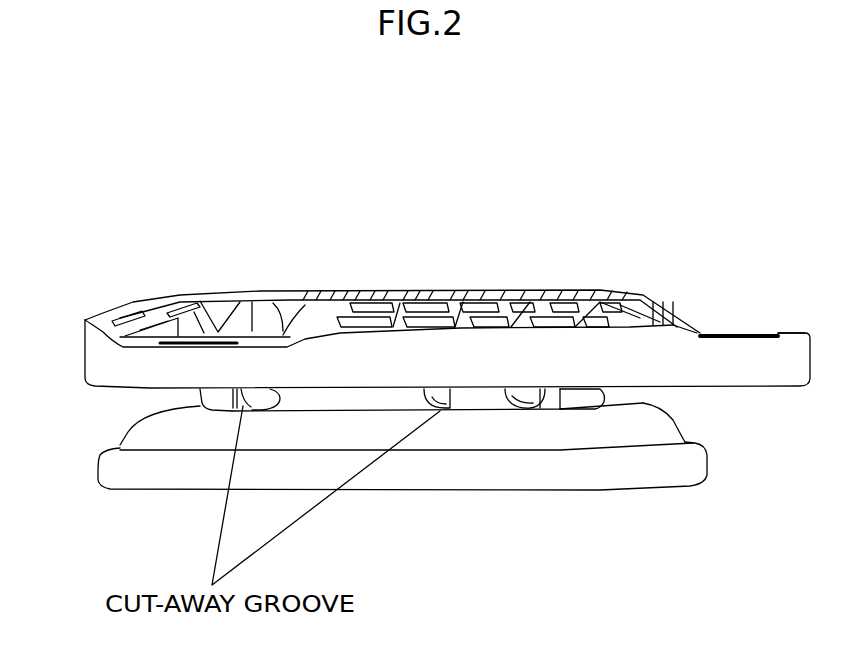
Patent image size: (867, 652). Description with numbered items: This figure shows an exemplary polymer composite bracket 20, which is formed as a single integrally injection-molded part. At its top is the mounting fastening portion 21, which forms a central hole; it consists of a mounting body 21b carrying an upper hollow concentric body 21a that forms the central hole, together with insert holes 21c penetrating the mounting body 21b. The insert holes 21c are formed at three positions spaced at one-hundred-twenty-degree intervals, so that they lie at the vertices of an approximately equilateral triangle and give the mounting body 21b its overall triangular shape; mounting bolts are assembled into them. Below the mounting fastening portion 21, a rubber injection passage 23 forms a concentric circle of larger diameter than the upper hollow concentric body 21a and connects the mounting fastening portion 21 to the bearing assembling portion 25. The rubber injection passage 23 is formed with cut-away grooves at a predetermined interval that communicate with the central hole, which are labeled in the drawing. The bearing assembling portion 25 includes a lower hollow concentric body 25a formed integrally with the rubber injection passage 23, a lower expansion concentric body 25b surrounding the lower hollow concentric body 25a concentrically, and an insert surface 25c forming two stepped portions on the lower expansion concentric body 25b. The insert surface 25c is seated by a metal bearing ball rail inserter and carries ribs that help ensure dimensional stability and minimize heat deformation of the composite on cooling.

The polymer composite bracket 20 is at (784, 292).
The mounting fastening portion 21 is at (62, 300).
The upper hollow concentric body 21a is at (506, 300).
The mounting body 21b is at (723, 328).
The insert holes 21c is at (777, 333).
The rubber injection passage 23 is at (587, 393).
The bearing assembling portion 25 is at (62, 398).
The lower hollow concentric body 25a is at (518, 420).
The lower expansion concentric body 25b is at (670, 468).
The insert surface 25c is at (605, 432).